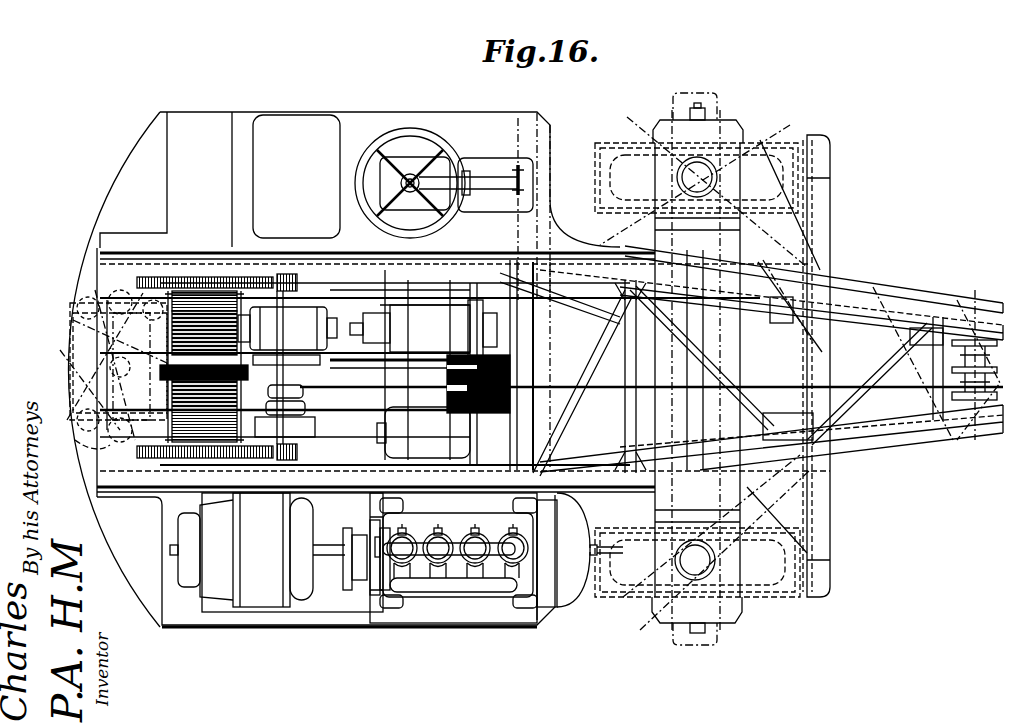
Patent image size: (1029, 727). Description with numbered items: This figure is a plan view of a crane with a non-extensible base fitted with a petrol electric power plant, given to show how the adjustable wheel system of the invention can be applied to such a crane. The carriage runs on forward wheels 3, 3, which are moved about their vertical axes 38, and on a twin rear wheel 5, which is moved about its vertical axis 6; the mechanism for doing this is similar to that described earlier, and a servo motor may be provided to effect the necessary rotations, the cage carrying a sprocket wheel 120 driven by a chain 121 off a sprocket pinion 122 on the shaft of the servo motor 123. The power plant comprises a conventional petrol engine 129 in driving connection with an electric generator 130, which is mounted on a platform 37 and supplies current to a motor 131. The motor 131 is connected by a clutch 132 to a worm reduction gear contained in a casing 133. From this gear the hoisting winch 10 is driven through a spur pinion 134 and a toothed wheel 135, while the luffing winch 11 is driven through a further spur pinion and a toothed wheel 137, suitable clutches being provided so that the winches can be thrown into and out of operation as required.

The forward wheels 3 is at (780, 582).
The rear wheel 5 is at (72, 380).
The vertical axle 6 is at (110, 450).
The hoisting winch 10 is at (167, 365).
The luffing winch 11 is at (180, 455).
The platform 37 is at (188, 612).
The vertical axles 38 is at (690, 565).
The sprocket wheel 120 is at (522, 178).
The chain 121 is at (518, 228).
The sprocket pinion 122 is at (530, 428).
The servo motor 123 is at (417, 430).
The petrol engine 129 is at (458, 563).
The electric generator 130 is at (280, 552).
The motor 131 is at (423, 328).
The clutch 132 is at (333, 375).
The casing 133 is at (270, 283).
The spur pinion 134 is at (290, 278).
The toothed wheel 135 is at (160, 272).
The toothed wheel 137 is at (303, 455).